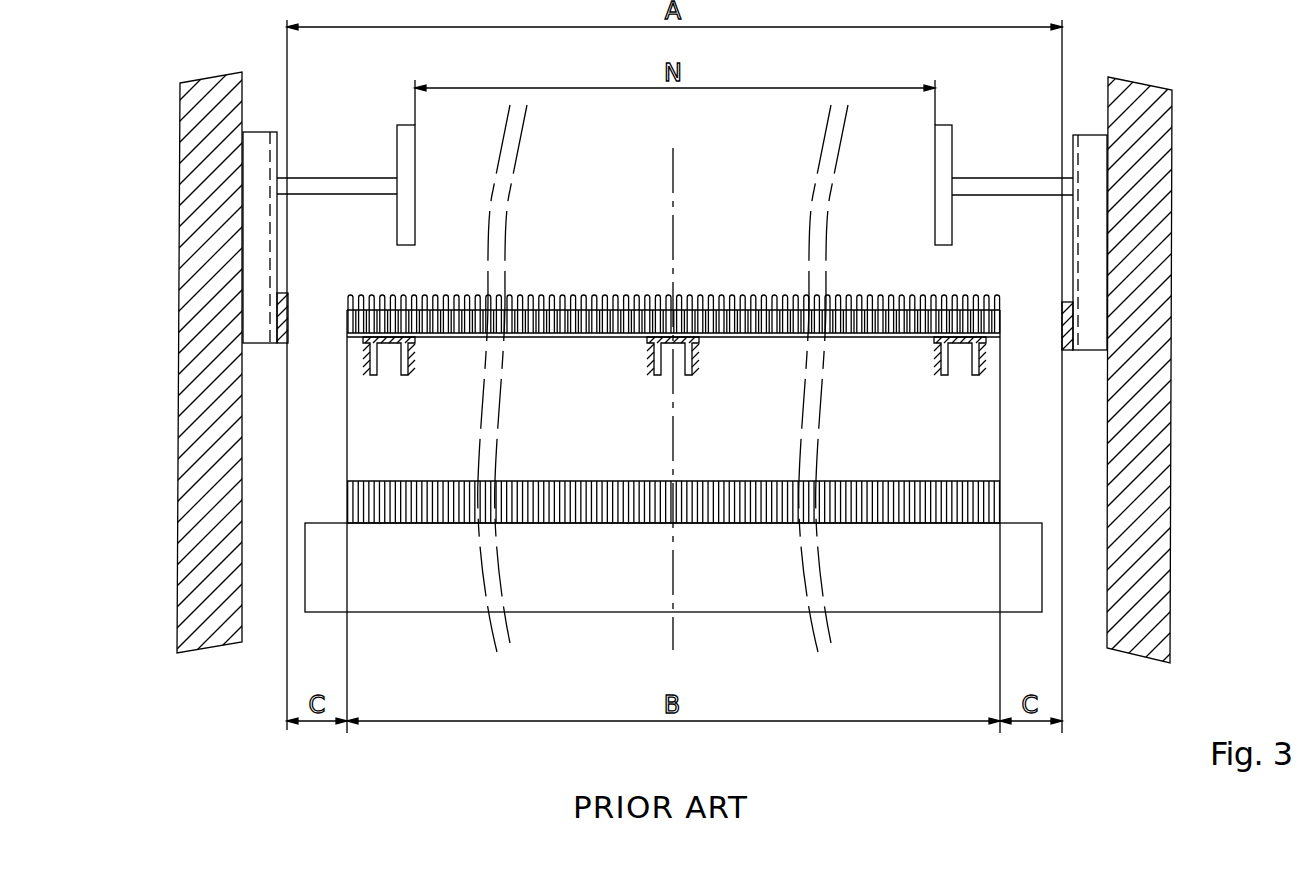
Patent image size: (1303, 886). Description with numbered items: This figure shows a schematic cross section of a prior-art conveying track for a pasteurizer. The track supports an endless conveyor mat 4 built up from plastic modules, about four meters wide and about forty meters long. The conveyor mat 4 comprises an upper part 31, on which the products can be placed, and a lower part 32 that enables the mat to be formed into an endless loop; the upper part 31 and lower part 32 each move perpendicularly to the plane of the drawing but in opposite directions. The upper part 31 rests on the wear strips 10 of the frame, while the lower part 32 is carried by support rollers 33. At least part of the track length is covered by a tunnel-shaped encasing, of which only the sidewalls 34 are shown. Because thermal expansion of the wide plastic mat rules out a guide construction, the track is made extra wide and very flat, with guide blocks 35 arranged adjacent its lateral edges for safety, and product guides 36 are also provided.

The conveyor mat 4 is at (566, 354).
The wear strips 10 is at (702, 325).
The upper part 31 is at (955, 302).
The lower part 32 is at (1000, 508).
The support rollers 33 is at (1005, 591).
The sidewalls 34 is at (215, 180).
The guide blocks 35 is at (288, 323).
The product guides 36 is at (412, 210).